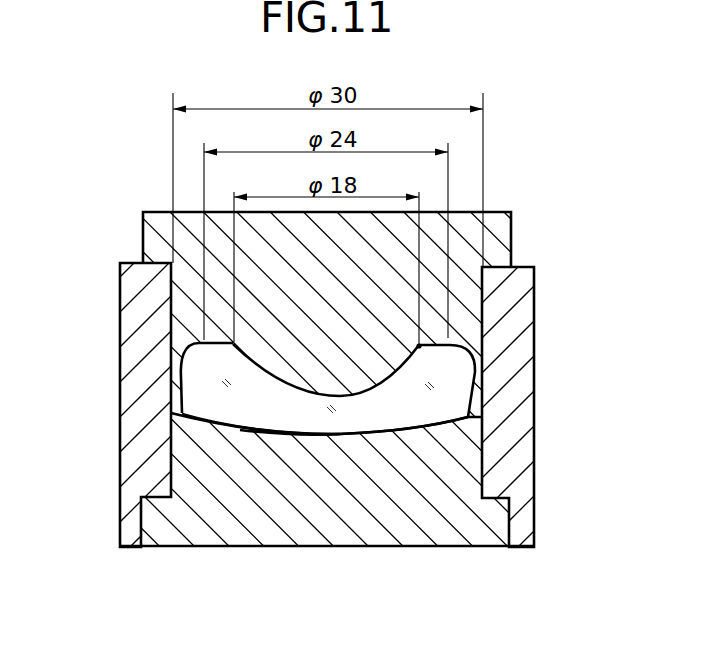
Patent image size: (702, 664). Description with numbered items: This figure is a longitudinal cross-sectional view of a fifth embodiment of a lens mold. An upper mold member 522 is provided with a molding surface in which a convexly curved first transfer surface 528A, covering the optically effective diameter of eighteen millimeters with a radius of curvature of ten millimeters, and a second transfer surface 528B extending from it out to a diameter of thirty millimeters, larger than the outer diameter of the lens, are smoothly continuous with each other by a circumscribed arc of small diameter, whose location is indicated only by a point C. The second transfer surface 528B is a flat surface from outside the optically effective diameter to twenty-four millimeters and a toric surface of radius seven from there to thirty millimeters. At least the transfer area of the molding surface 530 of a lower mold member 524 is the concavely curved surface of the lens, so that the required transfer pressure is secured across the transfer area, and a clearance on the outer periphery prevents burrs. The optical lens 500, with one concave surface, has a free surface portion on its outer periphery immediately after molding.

The upper mold member 522 is at (497, 212).
The lower mold member 524 is at (412, 538).
The optical lens 500 is at (190, 394).
The first transfer surface 528A is at (264, 392).
The second transfer surface 528B is at (194, 343).
The molding surface 530 is at (290, 424).
The point C is at (421, 356).